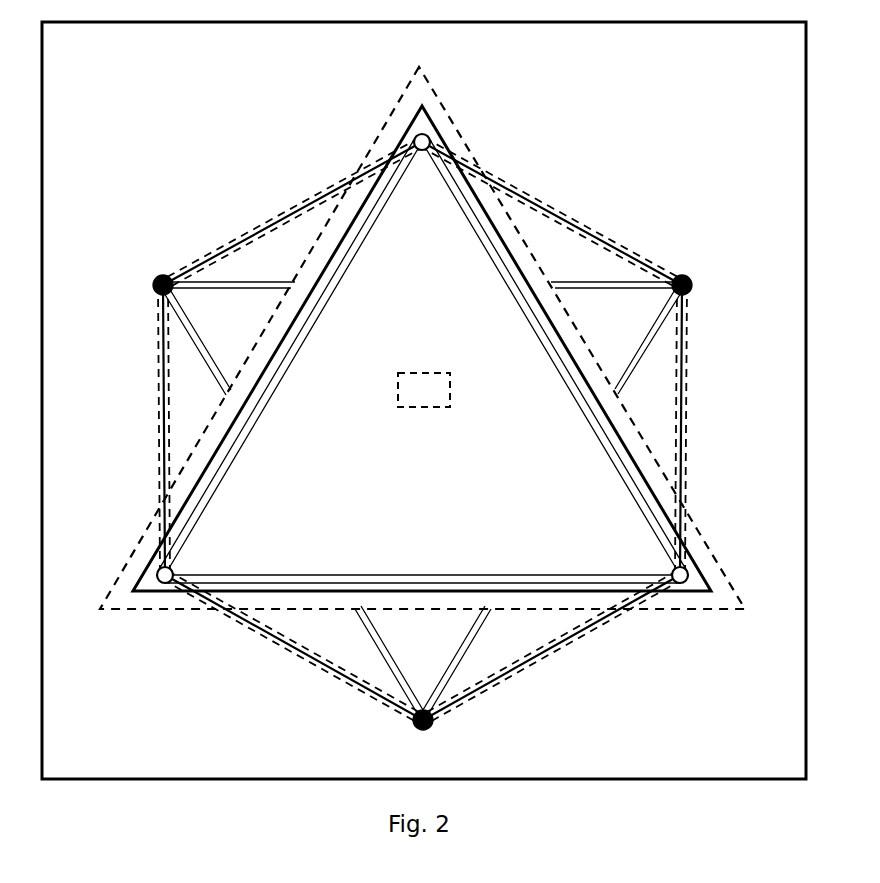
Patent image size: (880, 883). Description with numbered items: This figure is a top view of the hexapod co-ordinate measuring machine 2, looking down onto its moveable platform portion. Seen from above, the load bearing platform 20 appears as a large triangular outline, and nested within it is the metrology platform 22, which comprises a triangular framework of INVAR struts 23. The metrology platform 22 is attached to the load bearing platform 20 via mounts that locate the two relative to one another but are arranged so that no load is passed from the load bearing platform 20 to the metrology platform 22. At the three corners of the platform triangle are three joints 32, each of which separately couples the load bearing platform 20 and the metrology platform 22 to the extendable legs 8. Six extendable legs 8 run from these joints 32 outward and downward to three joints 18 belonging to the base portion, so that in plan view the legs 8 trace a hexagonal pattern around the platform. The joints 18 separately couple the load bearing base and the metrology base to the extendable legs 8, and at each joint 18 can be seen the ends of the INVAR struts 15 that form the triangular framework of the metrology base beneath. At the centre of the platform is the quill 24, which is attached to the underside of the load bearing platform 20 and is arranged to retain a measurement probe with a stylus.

The hexapod co-ordinate measuring machine 2 is at (662, 139).
The extendable legs 8 is at (282, 210).
The INVAR struts 15 is at (218, 292).
The joints 18 is at (162, 277).
The load bearing platform 20 is at (416, 98).
The metrology platform 22 is at (436, 124).
The INVAR struts 23 is at (343, 290).
The quill 24 is at (440, 402).
The joints 32 is at (414, 138).